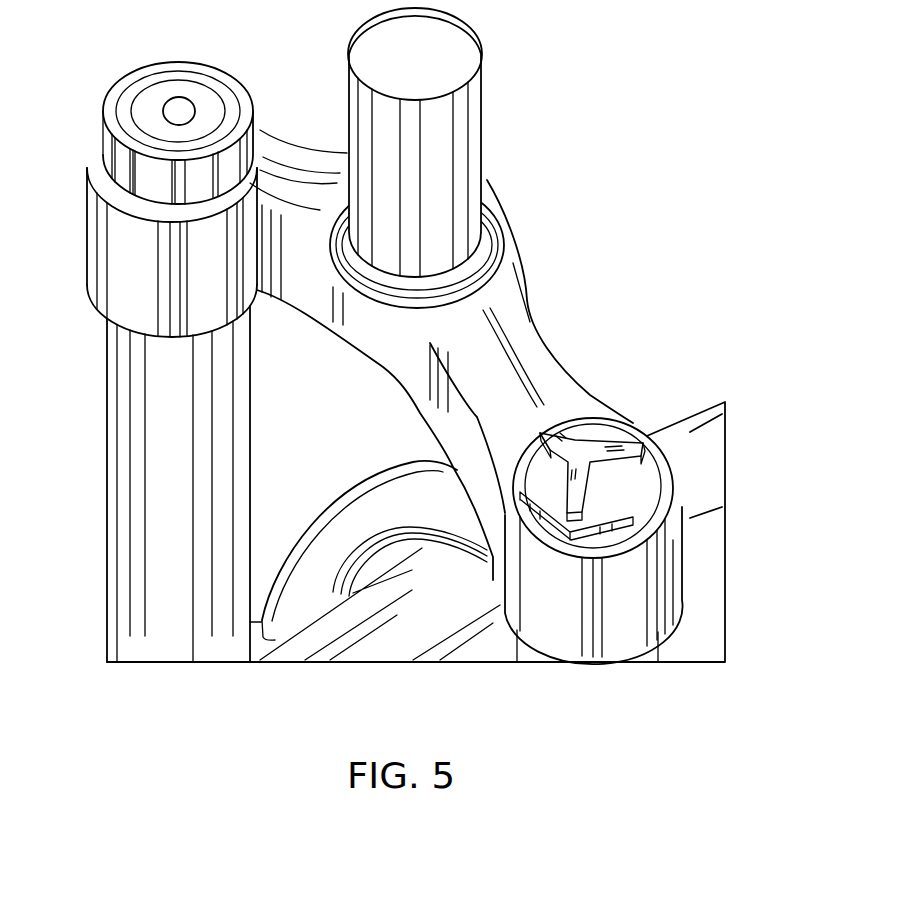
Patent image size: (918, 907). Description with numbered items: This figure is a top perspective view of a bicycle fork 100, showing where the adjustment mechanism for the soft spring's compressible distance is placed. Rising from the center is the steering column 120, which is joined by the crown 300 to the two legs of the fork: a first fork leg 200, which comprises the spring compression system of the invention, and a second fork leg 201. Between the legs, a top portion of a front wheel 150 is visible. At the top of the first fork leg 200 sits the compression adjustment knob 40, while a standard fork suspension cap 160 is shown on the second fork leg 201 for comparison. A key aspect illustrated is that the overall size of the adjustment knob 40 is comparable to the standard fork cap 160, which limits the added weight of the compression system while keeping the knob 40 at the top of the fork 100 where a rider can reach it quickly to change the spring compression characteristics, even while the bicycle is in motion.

The bicycle fork 100 is at (622, 174).
The steering column 120 is at (460, 103).
The standard fork suspension cap 160 is at (133, 100).
The crown 300 is at (540, 362).
The compression adjustment knob 40 is at (603, 432).
The second fork leg 201 is at (138, 458).
The first fork leg 200 is at (650, 647).
The front wheel 150 is at (402, 645).